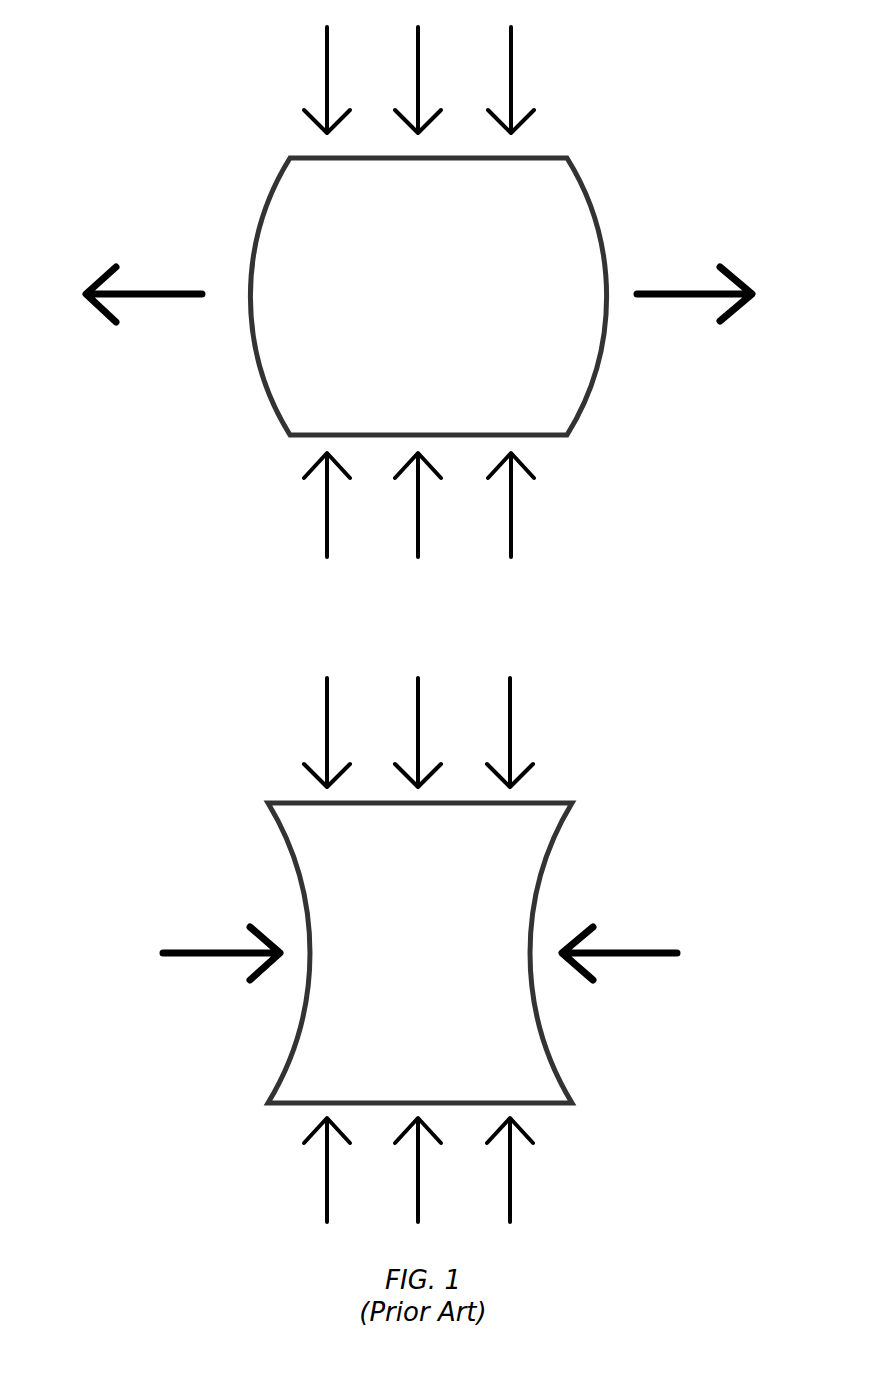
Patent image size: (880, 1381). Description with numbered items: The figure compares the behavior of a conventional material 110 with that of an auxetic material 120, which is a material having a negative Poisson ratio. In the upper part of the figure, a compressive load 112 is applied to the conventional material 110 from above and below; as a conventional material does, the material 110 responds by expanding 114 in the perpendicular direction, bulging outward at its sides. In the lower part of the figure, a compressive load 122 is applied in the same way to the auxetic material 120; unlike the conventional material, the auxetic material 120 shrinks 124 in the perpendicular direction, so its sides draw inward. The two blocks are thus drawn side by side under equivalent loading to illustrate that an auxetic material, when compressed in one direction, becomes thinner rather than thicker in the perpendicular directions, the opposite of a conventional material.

The conventional material 110 is at (567, 160).
The compressive load 112 is at (274, 77).
The expansion 114 is at (78, 268).
The auxetic material 120 is at (560, 802).
The compressive load 122 is at (274, 726).
The shrinkage 124 is at (154, 927).